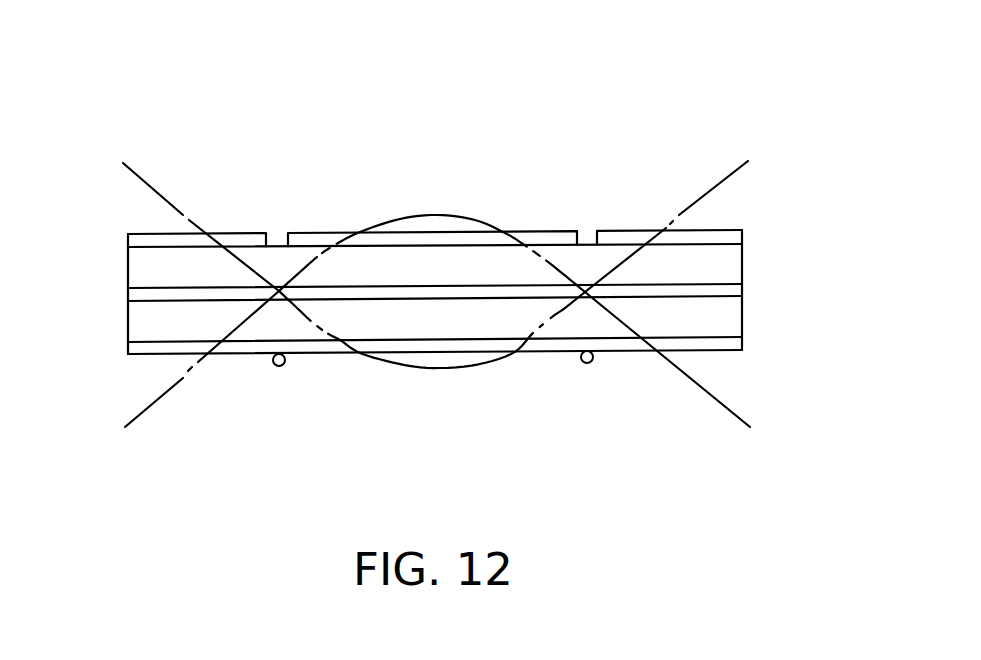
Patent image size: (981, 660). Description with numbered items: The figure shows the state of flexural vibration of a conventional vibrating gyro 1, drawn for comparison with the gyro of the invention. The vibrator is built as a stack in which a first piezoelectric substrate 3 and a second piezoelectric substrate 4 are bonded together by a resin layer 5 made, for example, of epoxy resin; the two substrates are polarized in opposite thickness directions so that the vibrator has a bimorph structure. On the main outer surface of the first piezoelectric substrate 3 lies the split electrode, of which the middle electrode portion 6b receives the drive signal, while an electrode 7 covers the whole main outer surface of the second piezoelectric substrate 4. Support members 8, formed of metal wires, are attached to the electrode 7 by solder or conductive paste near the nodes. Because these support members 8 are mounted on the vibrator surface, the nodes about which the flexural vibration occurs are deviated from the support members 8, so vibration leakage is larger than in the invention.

The vibrating gyro 1 is at (156, 140).
The first piezoelectric substrate 3 is at (722, 262).
The second piezoelectric substrate 4 is at (717, 317).
The resin layer 5 is at (728, 290).
The electrode portion 6b is at (548, 237).
The electrode 7 is at (720, 345).
The support members 8 is at (282, 367).